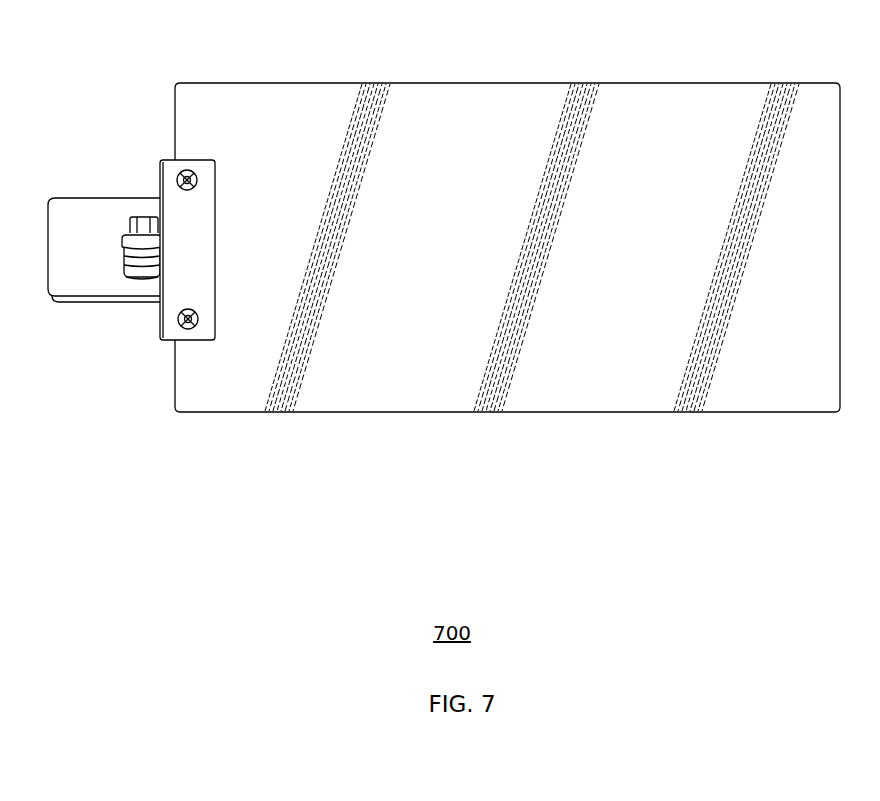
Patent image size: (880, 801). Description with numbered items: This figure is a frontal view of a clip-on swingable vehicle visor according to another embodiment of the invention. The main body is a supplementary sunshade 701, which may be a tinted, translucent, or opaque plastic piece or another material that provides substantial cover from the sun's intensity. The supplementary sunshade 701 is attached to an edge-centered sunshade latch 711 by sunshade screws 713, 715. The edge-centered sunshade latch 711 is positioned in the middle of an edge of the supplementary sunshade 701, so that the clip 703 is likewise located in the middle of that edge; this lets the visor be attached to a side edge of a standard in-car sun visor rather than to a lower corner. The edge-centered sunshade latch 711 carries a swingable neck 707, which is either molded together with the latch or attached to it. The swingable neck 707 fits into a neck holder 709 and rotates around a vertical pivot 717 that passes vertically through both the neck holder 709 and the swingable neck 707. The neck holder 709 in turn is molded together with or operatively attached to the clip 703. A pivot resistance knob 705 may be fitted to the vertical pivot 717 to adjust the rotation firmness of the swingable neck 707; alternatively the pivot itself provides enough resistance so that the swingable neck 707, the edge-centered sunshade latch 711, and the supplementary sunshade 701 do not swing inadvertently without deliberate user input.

The supplementary sunshade 701 is at (609, 325).
The clip 703 is at (94, 220).
The pivot resistance knob 705 is at (140, 204).
The swingable neck 707 is at (121, 267).
The neck holder 709 is at (129, 280).
The edge-centered sunshade latch 711 is at (201, 276).
The sunshade screw 713 is at (196, 348).
The sunshade screw 715 is at (208, 167).
The vertical pivot 717 is at (144, 290).